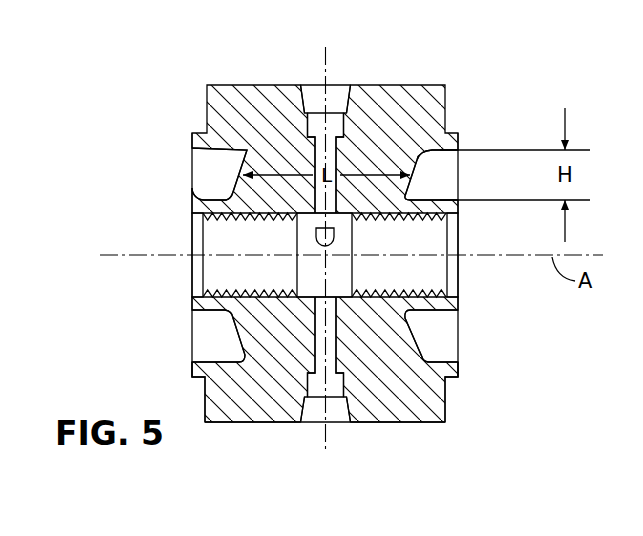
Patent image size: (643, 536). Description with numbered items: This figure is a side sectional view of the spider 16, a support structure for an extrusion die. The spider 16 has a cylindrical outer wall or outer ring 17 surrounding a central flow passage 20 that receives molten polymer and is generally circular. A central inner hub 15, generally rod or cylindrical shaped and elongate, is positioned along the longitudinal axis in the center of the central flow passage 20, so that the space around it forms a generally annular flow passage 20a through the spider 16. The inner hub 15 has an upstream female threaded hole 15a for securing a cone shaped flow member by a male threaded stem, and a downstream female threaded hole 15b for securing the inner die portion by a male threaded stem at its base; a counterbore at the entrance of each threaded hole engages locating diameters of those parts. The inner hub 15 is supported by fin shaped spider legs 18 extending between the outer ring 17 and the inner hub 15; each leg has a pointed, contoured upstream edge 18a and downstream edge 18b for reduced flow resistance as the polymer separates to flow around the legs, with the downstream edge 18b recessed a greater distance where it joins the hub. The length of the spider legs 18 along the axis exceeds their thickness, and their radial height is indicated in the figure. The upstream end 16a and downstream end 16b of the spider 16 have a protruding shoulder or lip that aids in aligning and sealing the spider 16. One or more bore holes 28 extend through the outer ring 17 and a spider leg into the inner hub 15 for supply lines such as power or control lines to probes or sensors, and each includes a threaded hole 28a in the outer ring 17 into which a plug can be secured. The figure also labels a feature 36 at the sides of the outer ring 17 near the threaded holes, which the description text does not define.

The inner hub 15 is at (192, 188).
The upstream female threaded hole 15a is at (216, 291).
The downstream female threaded hole 15b is at (375, 290).
The spider 16 is at (205, 446).
The upstream end 16a is at (192, 350).
The downstream end 16b is at (458, 358).
The outer ring 17 is at (252, 412).
The spider legs 18 is at (262, 143).
The upstream edge 18a is at (243, 172).
The downstream edge 18b is at (417, 170).
The central flow passage 20 is at (447, 316).
The annular flow passage 20a is at (450, 323).
The bore holes 28 is at (331, 140).
The threaded hole 28a is at (316, 100).
The sleeve 36 is at (192, 235).